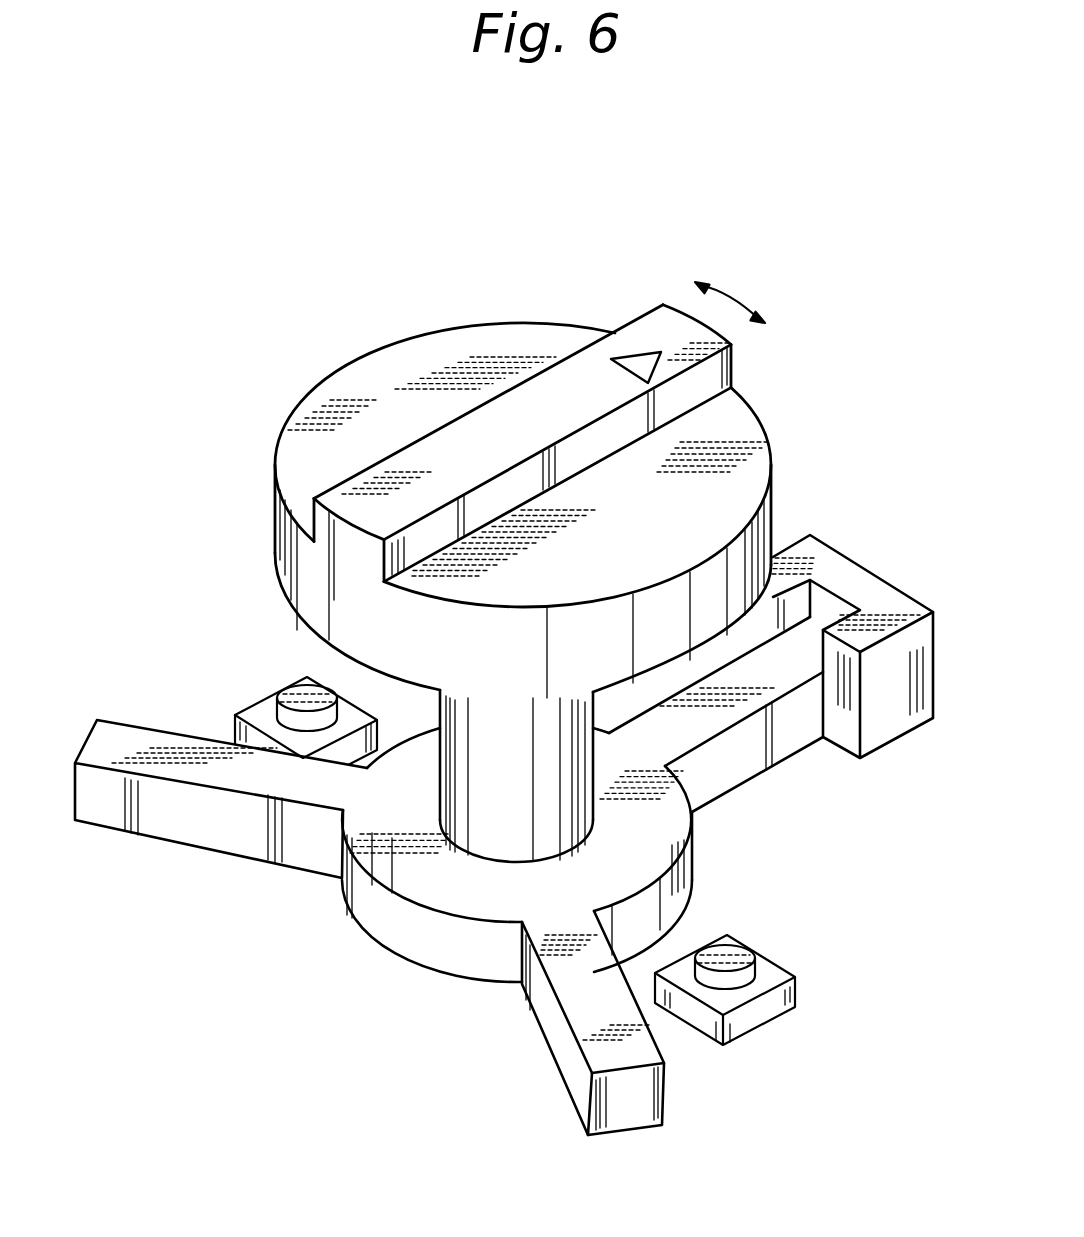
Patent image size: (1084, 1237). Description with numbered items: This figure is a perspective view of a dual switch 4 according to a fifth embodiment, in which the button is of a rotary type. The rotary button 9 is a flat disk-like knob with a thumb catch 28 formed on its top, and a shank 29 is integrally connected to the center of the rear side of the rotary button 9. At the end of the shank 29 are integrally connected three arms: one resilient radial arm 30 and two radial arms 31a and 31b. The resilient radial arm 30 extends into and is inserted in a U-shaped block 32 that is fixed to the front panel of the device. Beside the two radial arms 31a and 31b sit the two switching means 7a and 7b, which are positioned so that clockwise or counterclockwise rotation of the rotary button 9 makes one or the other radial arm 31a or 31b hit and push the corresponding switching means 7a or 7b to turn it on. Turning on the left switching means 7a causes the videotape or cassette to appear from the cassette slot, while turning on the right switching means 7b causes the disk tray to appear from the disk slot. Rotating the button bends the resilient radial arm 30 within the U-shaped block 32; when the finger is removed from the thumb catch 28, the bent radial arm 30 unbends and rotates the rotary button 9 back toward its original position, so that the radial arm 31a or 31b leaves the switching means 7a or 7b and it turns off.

The dual switch 4 is at (849, 342).
The rotary button 9 is at (410, 360).
The thumb catch 28 is at (657, 326).
The shank 29 is at (482, 807).
The resilient radial arm 30 is at (742, 768).
The radial arm 31a is at (157, 817).
The radial arm 31b is at (563, 1052).
The U-shaped block 32 is at (867, 578).
The switching means 7a is at (296, 692).
The switching means 7b is at (730, 948).